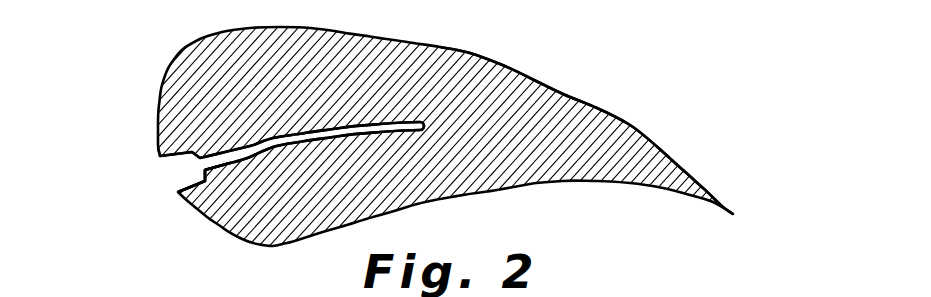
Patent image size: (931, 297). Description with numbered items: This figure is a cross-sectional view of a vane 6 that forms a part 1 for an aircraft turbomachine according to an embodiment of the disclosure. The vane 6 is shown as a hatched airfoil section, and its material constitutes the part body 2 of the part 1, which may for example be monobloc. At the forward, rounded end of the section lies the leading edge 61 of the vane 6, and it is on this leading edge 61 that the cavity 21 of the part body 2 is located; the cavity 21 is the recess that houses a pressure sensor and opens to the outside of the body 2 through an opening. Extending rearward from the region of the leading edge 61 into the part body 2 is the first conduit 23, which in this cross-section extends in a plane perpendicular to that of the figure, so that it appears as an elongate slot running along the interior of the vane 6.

The part 1 is at (465, 131).
The part body 2 is at (497, 155).
The vane 6 is at (630, 104).
The cavity 21 is at (183, 166).
The first conduit 23 is at (322, 133).
The leading edge 61 is at (150, 167).